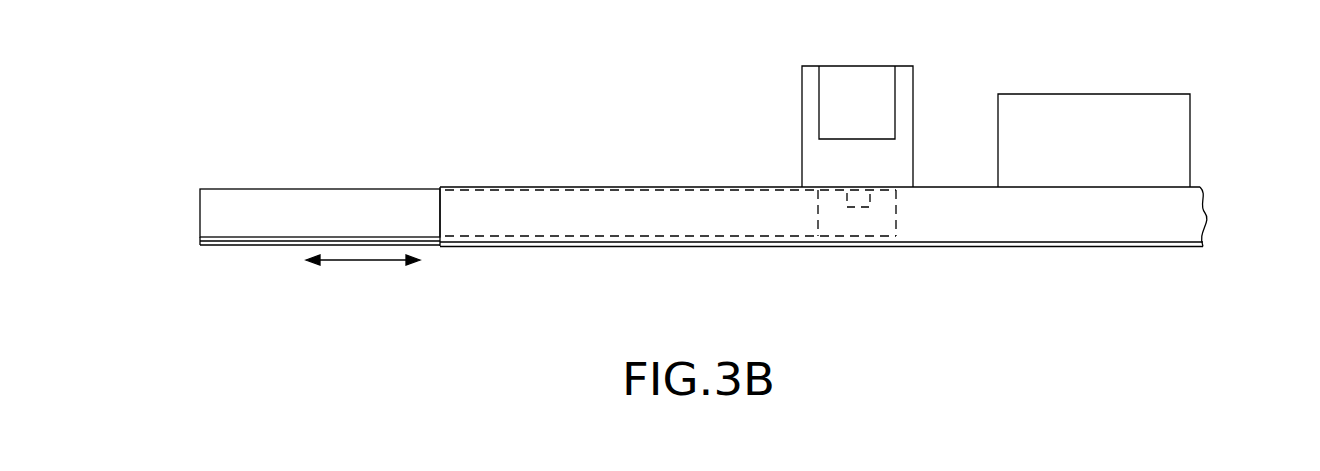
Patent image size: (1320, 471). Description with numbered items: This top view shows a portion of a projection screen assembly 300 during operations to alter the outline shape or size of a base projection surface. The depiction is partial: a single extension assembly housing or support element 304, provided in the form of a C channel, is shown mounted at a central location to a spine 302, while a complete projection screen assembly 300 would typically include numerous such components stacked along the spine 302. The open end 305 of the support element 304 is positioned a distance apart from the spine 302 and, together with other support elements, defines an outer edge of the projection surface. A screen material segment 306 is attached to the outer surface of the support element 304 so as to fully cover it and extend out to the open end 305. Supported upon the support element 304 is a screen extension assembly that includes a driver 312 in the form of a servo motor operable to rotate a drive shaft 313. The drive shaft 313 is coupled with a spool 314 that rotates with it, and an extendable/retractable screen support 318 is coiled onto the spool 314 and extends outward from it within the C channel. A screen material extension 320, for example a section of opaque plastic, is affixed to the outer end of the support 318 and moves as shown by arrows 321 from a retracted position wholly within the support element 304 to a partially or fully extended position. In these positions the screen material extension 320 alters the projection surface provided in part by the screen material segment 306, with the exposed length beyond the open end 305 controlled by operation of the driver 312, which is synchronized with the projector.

The projection screen assembly 300 is at (227, 135).
The spine 302 is at (1140, 97).
The extension assembly housing or support element 304 is at (1195, 183).
The open end 305 is at (450, 187).
The screen material segment 306 is at (1100, 245).
The driver 312 is at (913, 112).
The drive shaft 313 is at (865, 197).
The spool 314 is at (883, 235).
The extendable/retractable screen support 318 is at (333, 188).
The screen material extension 320 is at (200, 243).
The arrows 321 is at (357, 263).